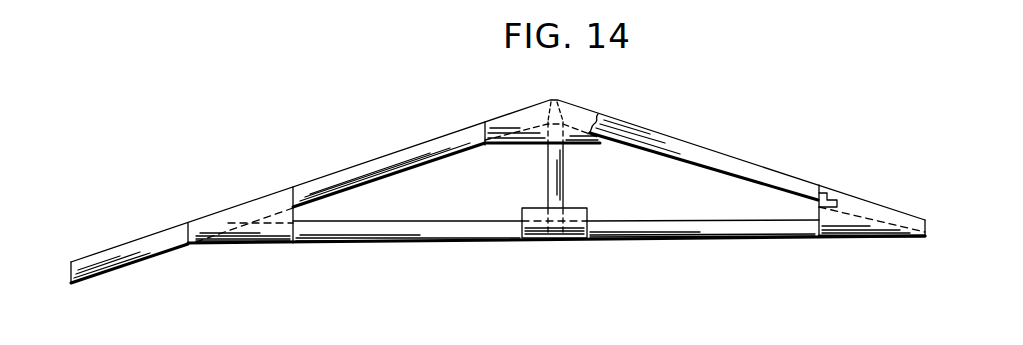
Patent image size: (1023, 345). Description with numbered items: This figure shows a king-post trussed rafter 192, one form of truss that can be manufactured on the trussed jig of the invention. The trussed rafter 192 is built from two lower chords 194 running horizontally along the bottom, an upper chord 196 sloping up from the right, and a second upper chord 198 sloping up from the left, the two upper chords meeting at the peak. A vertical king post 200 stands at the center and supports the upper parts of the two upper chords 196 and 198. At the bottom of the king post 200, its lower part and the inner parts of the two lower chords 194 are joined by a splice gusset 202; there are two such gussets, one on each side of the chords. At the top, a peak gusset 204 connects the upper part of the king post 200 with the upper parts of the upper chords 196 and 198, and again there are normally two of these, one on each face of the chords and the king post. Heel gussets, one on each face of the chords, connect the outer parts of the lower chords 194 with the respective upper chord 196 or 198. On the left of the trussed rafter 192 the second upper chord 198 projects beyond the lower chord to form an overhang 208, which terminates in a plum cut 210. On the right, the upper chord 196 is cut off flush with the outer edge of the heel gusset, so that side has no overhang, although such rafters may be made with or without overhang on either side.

The trussed rafter 192 is at (764, 167).
The lower chord 194 is at (432, 238).
The upper chord 196 is at (861, 202).
The second upper chord 198 is at (414, 148).
The king post 200 is at (552, 196).
The splice gusset 202 is at (574, 239).
The peak gusset 204 is at (566, 102).
The overhang 208 is at (173, 238).
The plum cut 210 is at (70, 278).